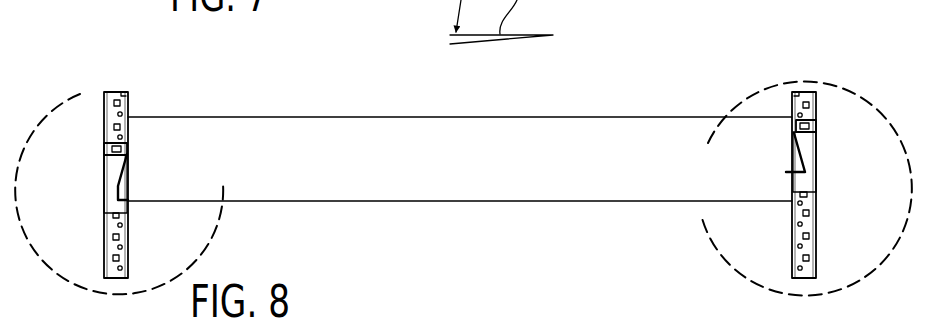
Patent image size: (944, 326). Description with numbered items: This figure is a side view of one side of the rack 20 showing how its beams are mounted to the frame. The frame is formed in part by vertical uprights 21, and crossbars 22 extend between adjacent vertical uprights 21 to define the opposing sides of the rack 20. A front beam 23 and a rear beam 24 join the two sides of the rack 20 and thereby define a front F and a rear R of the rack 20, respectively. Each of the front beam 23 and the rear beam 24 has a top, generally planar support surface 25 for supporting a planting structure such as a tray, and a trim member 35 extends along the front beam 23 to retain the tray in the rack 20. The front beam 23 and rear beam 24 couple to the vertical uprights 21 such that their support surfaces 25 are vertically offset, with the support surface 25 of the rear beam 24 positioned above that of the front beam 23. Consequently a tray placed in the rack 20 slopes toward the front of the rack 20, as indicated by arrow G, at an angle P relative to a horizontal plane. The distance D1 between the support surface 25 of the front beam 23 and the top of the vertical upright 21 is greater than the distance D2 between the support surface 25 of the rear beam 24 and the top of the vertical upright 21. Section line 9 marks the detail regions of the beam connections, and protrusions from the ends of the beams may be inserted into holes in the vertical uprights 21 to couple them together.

The section line 9- 9 is at (62, 108).
The rack 20 is at (643, 76).
The vertical upright 21 is at (108, 270).
The crossbar 22 is at (582, 127).
The front beam 23 is at (112, 187).
The rear beam 24 is at (798, 153).
The support surface 25 is at (118, 153).
The trim member 35 is at (110, 133).
The distance D1 is at (92, 93).
The distance D2 is at (826, 150).
The front F is at (77, 162).
The arrow G is at (485, 70).
The angle P is at (457, 50).
The rear R is at (823, 198).